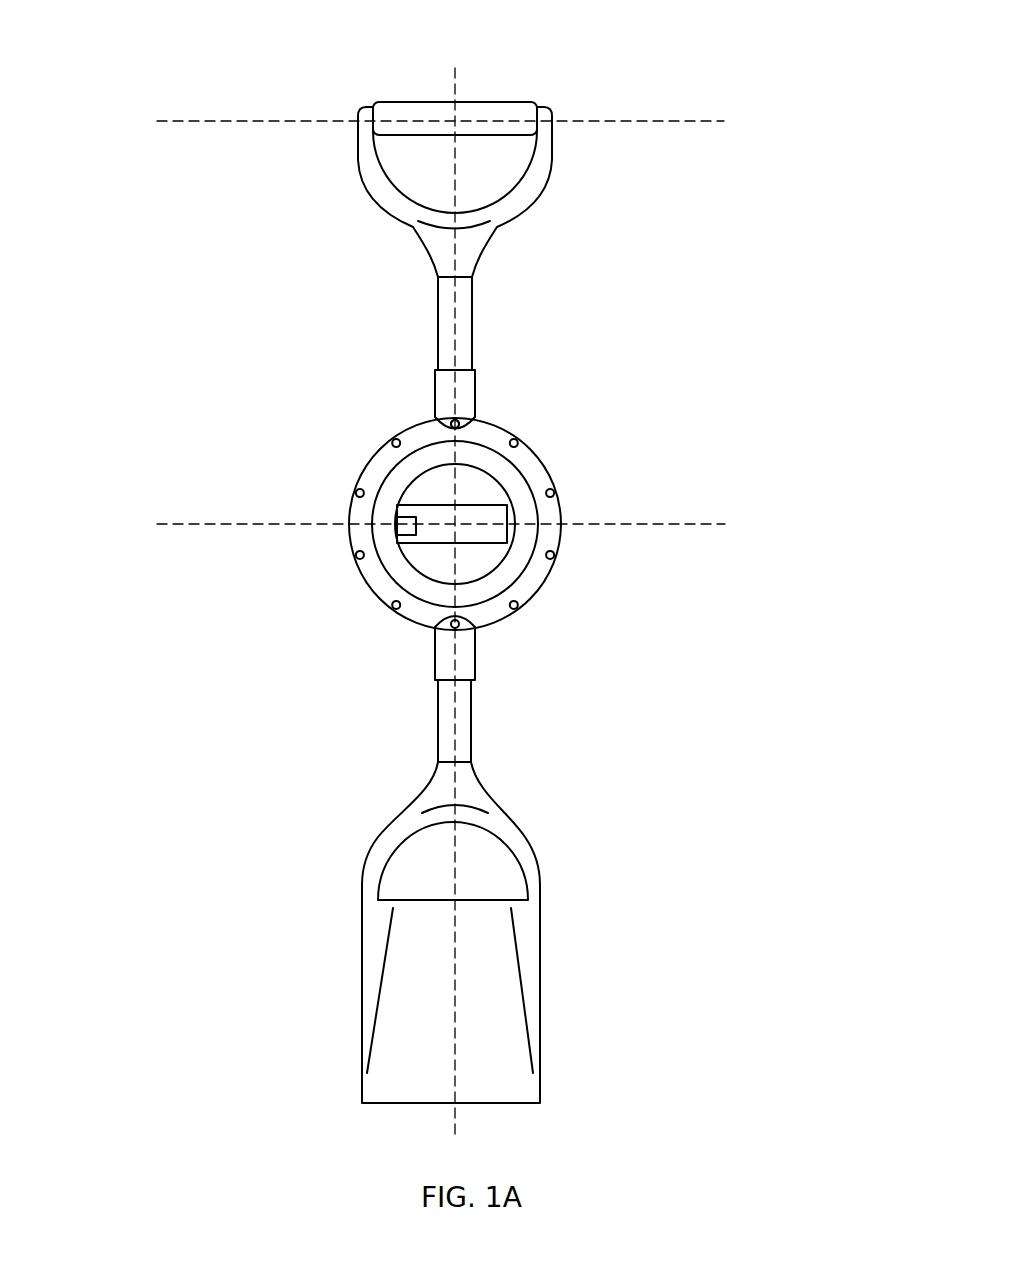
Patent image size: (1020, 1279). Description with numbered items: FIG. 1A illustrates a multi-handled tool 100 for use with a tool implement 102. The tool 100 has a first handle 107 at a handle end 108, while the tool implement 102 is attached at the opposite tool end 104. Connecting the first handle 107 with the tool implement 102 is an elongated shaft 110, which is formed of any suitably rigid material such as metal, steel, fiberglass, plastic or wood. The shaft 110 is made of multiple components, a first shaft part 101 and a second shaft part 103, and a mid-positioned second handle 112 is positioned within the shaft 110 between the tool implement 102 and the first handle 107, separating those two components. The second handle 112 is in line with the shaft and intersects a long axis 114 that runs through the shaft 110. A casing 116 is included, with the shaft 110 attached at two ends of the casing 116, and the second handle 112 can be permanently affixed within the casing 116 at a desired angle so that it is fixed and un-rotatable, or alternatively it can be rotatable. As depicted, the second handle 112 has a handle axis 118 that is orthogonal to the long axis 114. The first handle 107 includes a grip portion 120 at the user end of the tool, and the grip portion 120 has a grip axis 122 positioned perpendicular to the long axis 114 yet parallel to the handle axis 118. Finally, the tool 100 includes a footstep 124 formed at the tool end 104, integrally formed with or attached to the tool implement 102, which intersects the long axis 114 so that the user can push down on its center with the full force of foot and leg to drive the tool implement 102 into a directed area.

The multi-handled tool 100 is at (142, 80).
The first shaft part 101 is at (454, 353).
The tool implement 102 is at (479, 932).
The second shaft part 103 is at (465, 708).
The tool end 104 is at (465, 760).
The first handle 107 is at (545, 158).
The handle end 108 is at (467, 285).
The elongated shaft 110 is at (470, 335).
The second handle 112 is at (482, 510).
The long axis 114 is at (452, 717).
The casing 116 is at (370, 467).
The handle axis 118 is at (675, 525).
The grip portion 120 is at (493, 98).
The grip axis 122 is at (597, 118).
The footstep 124 is at (408, 900).